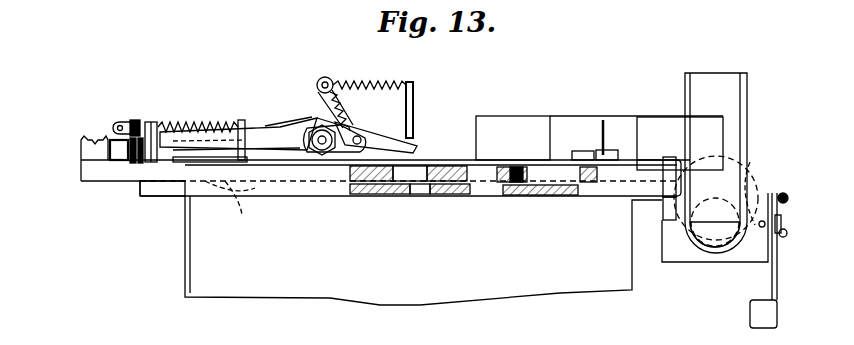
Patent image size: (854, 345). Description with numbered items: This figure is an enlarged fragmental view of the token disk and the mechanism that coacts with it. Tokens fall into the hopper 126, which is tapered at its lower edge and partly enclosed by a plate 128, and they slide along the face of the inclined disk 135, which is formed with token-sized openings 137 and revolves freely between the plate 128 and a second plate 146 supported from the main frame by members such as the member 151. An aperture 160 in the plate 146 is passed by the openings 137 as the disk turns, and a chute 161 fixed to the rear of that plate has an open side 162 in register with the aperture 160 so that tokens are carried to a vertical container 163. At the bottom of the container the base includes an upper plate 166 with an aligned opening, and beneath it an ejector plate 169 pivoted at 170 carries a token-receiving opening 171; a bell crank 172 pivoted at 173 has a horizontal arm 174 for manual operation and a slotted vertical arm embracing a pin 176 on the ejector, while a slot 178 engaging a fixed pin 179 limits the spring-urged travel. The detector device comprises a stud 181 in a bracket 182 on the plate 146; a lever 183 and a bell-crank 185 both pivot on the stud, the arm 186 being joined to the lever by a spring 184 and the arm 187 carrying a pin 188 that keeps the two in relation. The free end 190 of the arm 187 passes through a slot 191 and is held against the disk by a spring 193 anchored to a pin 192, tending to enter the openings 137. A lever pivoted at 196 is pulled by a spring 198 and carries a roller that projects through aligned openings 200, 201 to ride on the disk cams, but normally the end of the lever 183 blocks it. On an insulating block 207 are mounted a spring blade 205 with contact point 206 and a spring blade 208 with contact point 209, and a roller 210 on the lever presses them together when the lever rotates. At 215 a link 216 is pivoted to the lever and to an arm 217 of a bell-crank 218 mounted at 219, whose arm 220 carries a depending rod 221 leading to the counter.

The hopper 126 is at (573, 291).
The plate 128 is at (455, 195).
The disk 135 is at (368, 184).
The openings 137 is at (405, 192).
The plate 146 is at (437, 167).
The member 151 is at (95, 150).
The aperture 160 is at (548, 195).
The chute 161 is at (557, 116).
The open side 162 is at (492, 168).
The container 163 is at (697, 255).
The upper plate 166 is at (670, 262).
The ejector plate 169 is at (740, 171).
The pivot 170 is at (740, 194).
The opening 171 is at (716, 222).
The bell crank 172 is at (779, 250).
The pivot 173 is at (782, 222).
The horizontally projecting arm 174 is at (778, 300).
The pin 176 is at (787, 234).
The slot 178 is at (747, 136).
The pin 179 is at (712, 168).
The stud 181 is at (317, 118).
The bracket 182 is at (309, 143).
The lever 183 is at (298, 130).
The spring 184 is at (322, 108).
The bell-crank 185 is at (312, 117).
The arm 186 is at (326, 77).
The arm 187 is at (375, 141).
The pin 188 is at (353, 118).
The free end 190 is at (420, 193).
The slot 191 is at (420, 163).
The pin 192 is at (415, 96).
The spring 193 is at (388, 84).
The pivot 196 is at (165, 196).
The spring 198 is at (193, 122).
The opening 200 is at (258, 189).
The opening 201 is at (238, 207).
The spring blade 205 is at (128, 163).
The contact point 206 is at (140, 165).
The block 207 is at (137, 122).
The spring blade 208 is at (173, 149).
The contact point 209 is at (150, 162).
The roller 210 is at (110, 140).
The pivot 215 is at (232, 156).
The link 216 is at (492, 160).
The arm 217 is at (572, 153).
The bell-crank 218 is at (615, 150).
The pivot 219 is at (606, 143).
The arm 220 is at (650, 160).
The depending rod 221 is at (668, 222).